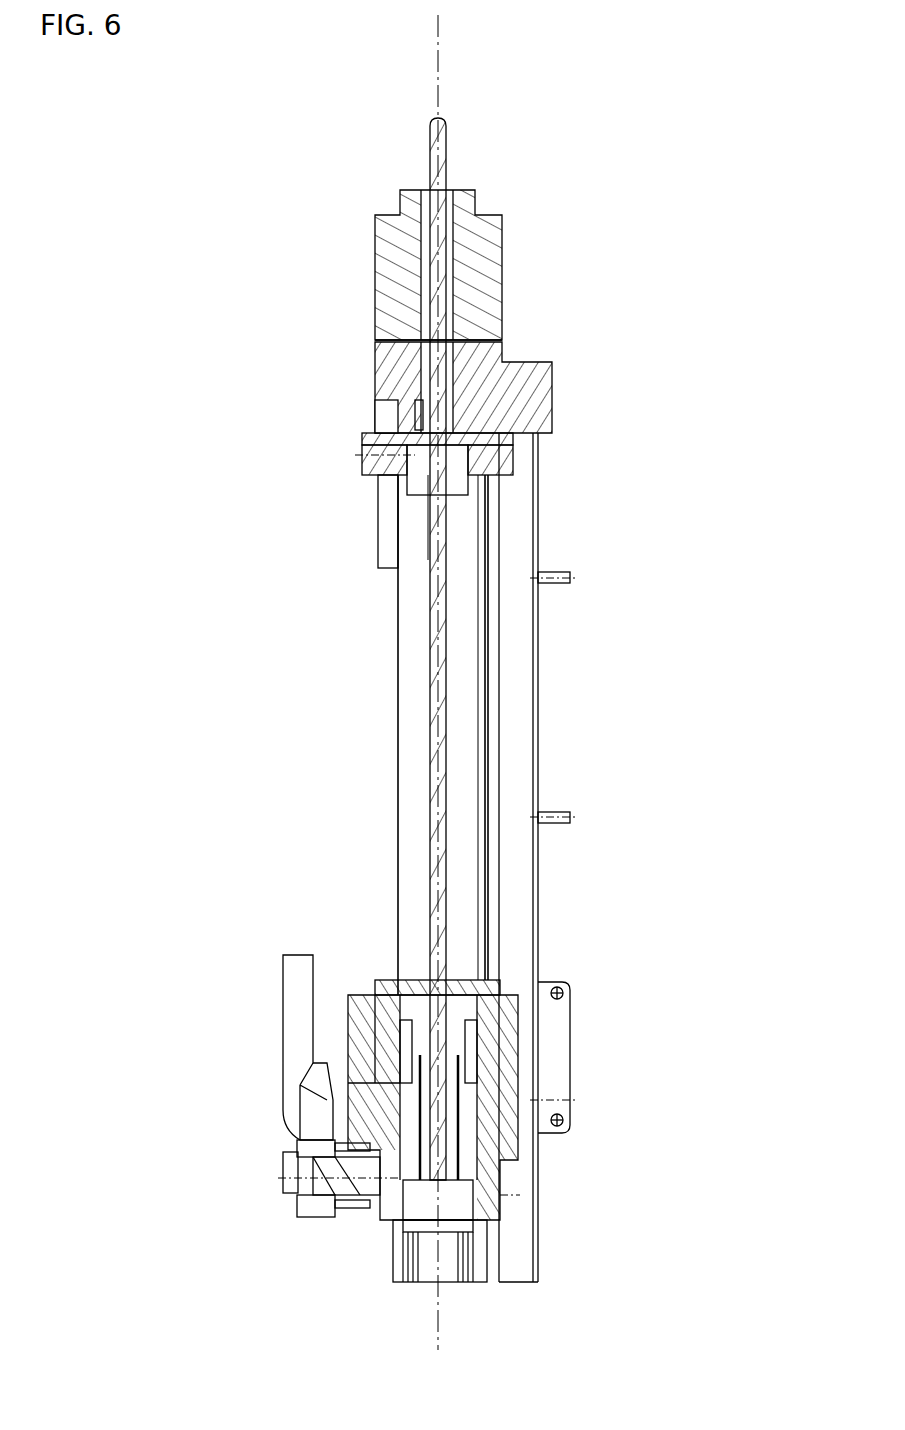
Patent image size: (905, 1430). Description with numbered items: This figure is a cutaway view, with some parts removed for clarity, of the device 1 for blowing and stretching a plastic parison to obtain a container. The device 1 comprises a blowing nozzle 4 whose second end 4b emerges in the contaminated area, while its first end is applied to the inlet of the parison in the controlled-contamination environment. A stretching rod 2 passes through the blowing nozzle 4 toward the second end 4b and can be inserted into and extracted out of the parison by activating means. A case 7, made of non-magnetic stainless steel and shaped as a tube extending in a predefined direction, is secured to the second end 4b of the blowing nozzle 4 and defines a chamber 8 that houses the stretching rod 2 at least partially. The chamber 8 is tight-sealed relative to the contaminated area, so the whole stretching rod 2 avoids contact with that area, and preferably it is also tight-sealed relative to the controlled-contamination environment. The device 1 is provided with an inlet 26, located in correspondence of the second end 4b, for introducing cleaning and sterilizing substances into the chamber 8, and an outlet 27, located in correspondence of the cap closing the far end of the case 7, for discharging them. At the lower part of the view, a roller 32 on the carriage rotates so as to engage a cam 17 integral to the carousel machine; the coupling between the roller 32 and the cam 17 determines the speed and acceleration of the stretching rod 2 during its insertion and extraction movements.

The device for blowing and stretching a plastic parison 1 is at (694, 266).
The stretching rod 2 is at (438, 652).
The blowing nozzle 4 is at (368, 265).
The second end of the blowing nozzle 4b is at (461, 484).
The case 7 is at (394, 603).
The chamber 8 is at (418, 730).
The cam 17 is at (300, 1015).
The inlet 26 is at (385, 450).
The outlet 27 is at (438, 1222).
The roller 32 is at (290, 1168).